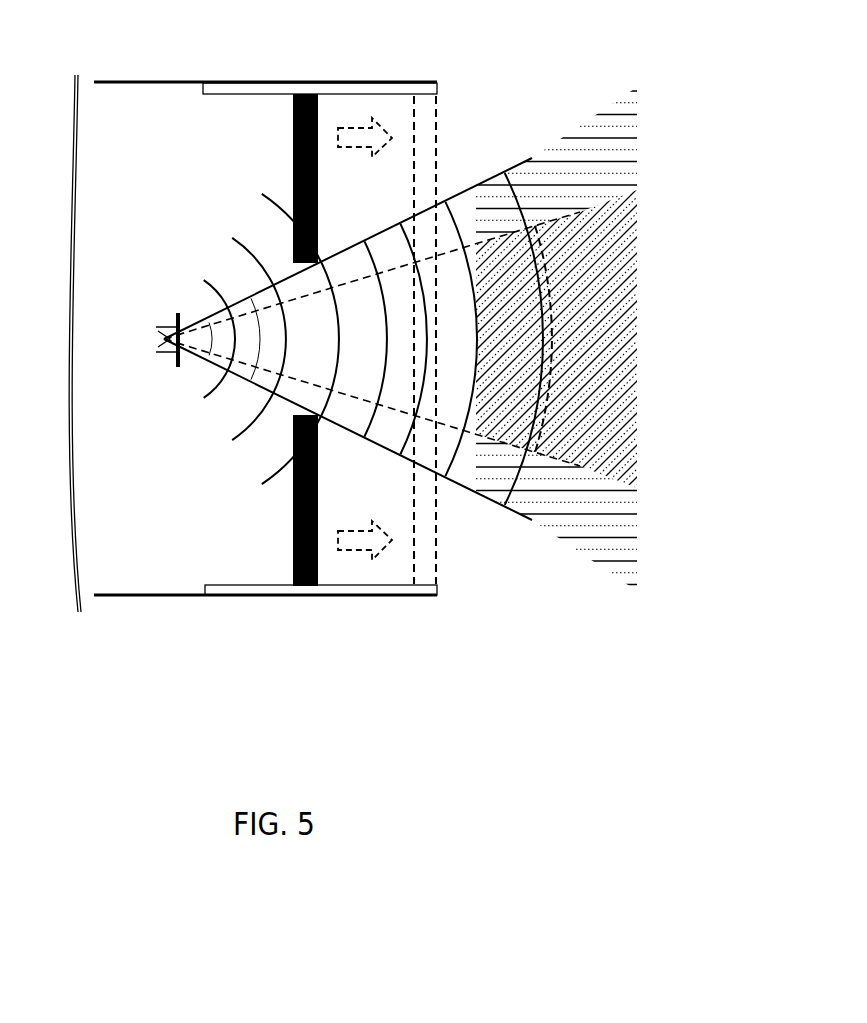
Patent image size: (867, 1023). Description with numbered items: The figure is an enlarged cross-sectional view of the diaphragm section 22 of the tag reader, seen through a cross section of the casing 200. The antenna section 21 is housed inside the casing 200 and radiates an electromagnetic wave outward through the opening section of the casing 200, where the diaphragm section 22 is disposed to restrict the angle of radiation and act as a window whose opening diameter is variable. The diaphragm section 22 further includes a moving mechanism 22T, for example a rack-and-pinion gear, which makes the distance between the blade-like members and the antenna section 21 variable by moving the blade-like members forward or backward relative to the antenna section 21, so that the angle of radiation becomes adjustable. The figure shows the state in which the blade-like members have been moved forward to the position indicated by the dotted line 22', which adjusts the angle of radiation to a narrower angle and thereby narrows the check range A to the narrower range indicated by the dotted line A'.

The casing 200 is at (151, 81).
The moving mechanism 22T is at (357, 82).
The diaphragm section 22 is at (278, 340).
The moved-forward position of blade-like members 22' is at (414, 340).
The antenna section 21 is at (176, 320).
The check range A is at (553, 338).
The narrower check range A' is at (522, 330).